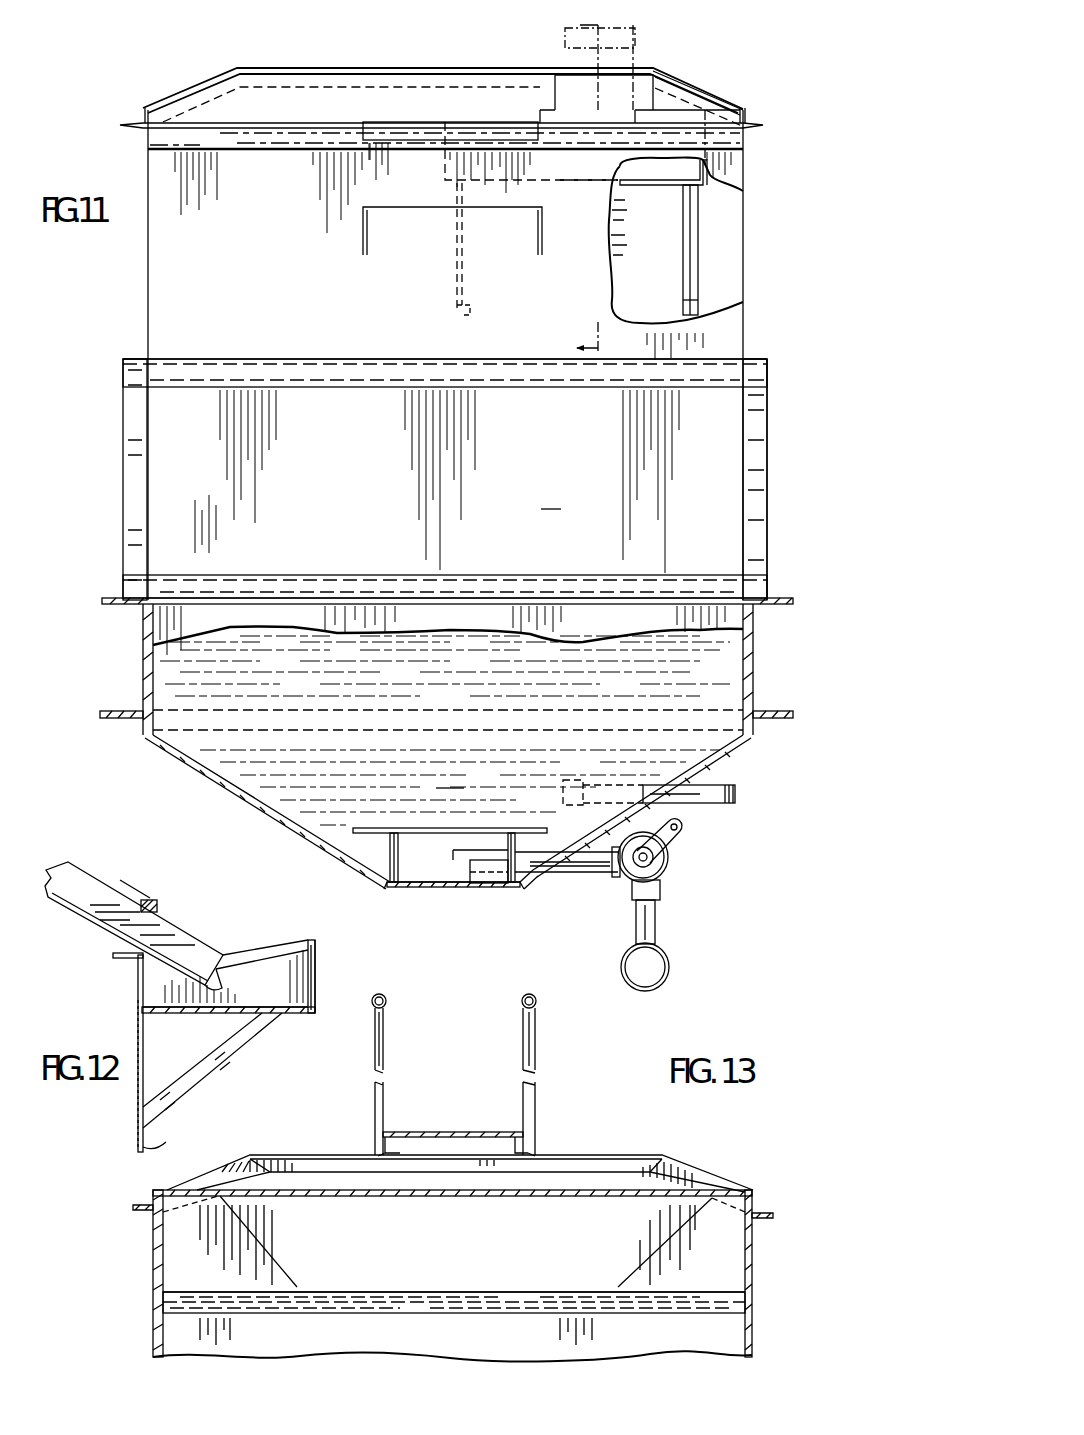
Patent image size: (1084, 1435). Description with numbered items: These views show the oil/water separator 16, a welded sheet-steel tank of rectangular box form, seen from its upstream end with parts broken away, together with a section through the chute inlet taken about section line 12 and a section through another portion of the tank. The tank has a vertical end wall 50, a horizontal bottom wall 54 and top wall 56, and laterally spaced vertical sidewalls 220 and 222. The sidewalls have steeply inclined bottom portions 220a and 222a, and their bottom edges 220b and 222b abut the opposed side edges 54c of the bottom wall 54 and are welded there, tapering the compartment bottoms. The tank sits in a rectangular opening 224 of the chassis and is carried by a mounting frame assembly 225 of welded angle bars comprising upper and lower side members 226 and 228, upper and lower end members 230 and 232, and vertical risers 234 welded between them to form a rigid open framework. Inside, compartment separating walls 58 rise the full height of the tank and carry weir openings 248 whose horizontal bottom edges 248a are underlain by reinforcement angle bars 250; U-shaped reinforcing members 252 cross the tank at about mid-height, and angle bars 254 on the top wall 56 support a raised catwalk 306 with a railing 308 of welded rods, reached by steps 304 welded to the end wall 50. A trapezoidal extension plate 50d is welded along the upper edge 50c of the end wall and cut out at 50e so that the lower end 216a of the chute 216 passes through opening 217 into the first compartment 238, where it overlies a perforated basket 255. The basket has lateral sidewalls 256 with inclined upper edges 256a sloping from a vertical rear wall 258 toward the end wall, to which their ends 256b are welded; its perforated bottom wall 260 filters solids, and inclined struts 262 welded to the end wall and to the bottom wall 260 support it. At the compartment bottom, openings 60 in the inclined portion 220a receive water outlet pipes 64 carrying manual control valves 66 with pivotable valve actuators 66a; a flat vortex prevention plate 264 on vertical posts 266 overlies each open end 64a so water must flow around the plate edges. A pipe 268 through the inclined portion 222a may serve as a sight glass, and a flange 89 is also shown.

In FIG. 11, the heater 12 is at (641, 182).
In FIG. 11, the separator 16 is at (774, 270).
In FIG. 11, the end wall 50 is at (551, 497).
In FIG. 11, the upper edge 50c is at (392, 105).
In FIG. 11, the trapezoidal extension plate 50d is at (312, 90).
In FIG. 11, the cut out 50e is at (656, 82).
In FIG. 11, the bottom wall 54 is at (440, 888).
In FIG. 11, the side edges 54c is at (395, 889).
In FIG. 11, the top wall 56 is at (144, 105).
In FIG. 13, the top wall 56 is at (681, 1174).
In FIG. 11, the compartment separating walls 58 is at (725, 660).
In FIG. 13, the compartment separating walls 58 is at (370, 1342).
In FIG. 11, the openings 60 is at (560, 850).
In FIG. 11, the water outlet pipes 64 is at (637, 917).
In FIG. 11, the open end 64a is at (456, 857).
In FIG. 11, the manual control valve 66 is at (668, 872).
In FIG. 11, the valve actuator 66a is at (679, 838).
In FIG. 11, the mounting flange 89 is at (115, 711).
In FIG. 11, the chute 216 is at (640, 42).
In FIG. 12, the chute 216 is at (110, 938).
In FIG. 12, the lower end 216a is at (219, 985).
In FIG. 11, the opening 217 is at (575, 90).
In FIG. 12, the opening 217 is at (140, 897).
In FIG. 11, the sidewall 220 is at (143, 278).
In FIG. 13, the sidewall 220 is at (753, 1286).
In FIG. 11, the inwardly inclined portion 220a is at (316, 841).
In FIG. 11, the bottom edge 220b is at (385, 885).
In FIG. 11, the sidewall 222 is at (745, 292).
In FIG. 13, the sidewall 222 is at (155, 1272).
In FIG. 11, the inclined portion 222a is at (724, 750).
In FIG. 11, the bottom edge 222b is at (522, 889).
In FIG. 11, the rectangular opening 224 is at (157, 690).
In FIG. 11, the mounting frame assembly 225 is at (769, 386).
In FIG. 11, the upper side member 226 is at (770, 362).
In FIG. 11, the lower side member 228 is at (778, 598).
In FIG. 11, the upper end member 230 is at (352, 360).
In FIG. 11, the lower end member 232 is at (312, 575).
In FIG. 11, the vertical risers 234 is at (124, 497).
In FIG. 11, the compartment 238 is at (450, 775).
In FIG. 13, the weir openings 248 is at (275, 1259).
In FIG. 13, the horizontal bottom edges 248a is at (347, 1290).
In FIG. 13, the reinforcement angle bars 250 is at (455, 1292).
In FIG. 11, the U-shaped reinforcing members 252 is at (547, 712).
In FIG. 11, the angle bars 254 is at (255, 68).
In FIG. 12, the angle bars 254 is at (153, 900).
In FIG. 13, the angle bars 254 is at (630, 1156).
In FIG. 11, the perforated basket 255 is at (643, 192).
In FIG. 12, the perforated basket 255 is at (291, 1016).
In FIG. 11, the lateral sidewalls 256 is at (446, 171).
In FIG. 12, the lateral sidewalls 256 is at (307, 945).
In FIG. 12, the inclined upper edges 256a is at (240, 950).
In FIG. 12, the ends 256b is at (138, 990).
In FIG. 11, the vertical rear wall 258 is at (690, 181).
In FIG. 12, the vertical rear wall 258 is at (317, 987).
In FIG. 11, the bottom wall 260 is at (613, 190).
In FIG. 12, the bottom wall 260 is at (197, 1015).
In FIG. 11, the inclined struts 262 is at (470, 302).
In FIG. 12, the inclined struts 262 is at (208, 1076).
In FIG. 11, the vortex prevention plate 264 is at (395, 828).
In FIG. 11, the vertical posts 266 is at (388, 846).
In FIG. 11, the pipe 268 is at (714, 804).
In FIG. 11, the steps 304 is at (392, 132).
In FIG. 13, the catwalk 306 is at (540, 1140).
In FIG. 13, the railing 308 is at (538, 1001).